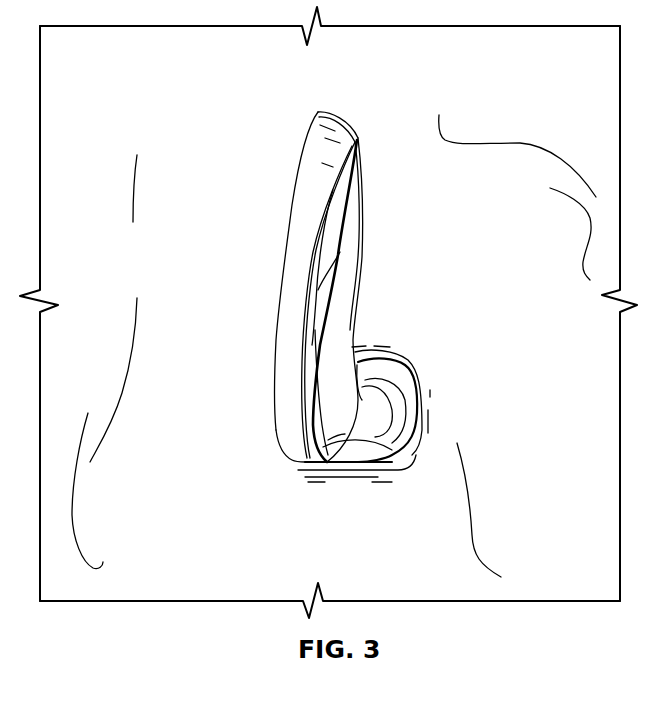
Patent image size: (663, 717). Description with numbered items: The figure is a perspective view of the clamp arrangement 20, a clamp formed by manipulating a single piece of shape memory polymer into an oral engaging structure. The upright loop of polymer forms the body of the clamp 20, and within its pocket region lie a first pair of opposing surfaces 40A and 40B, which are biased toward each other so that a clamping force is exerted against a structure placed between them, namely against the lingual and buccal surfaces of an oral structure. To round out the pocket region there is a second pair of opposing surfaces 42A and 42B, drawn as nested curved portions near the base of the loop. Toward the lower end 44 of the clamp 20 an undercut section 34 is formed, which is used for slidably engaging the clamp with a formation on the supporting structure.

The clamp arrangement 20 is at (273, 158).
The undercut section 34 is at (290, 460).
The first opposing surface 40A is at (405, 430).
The first opposing surface 40B is at (272, 402).
The second opposing surface 42A is at (365, 392).
The second opposing surface 42B is at (352, 453).
The lower end 44 is at (275, 438).